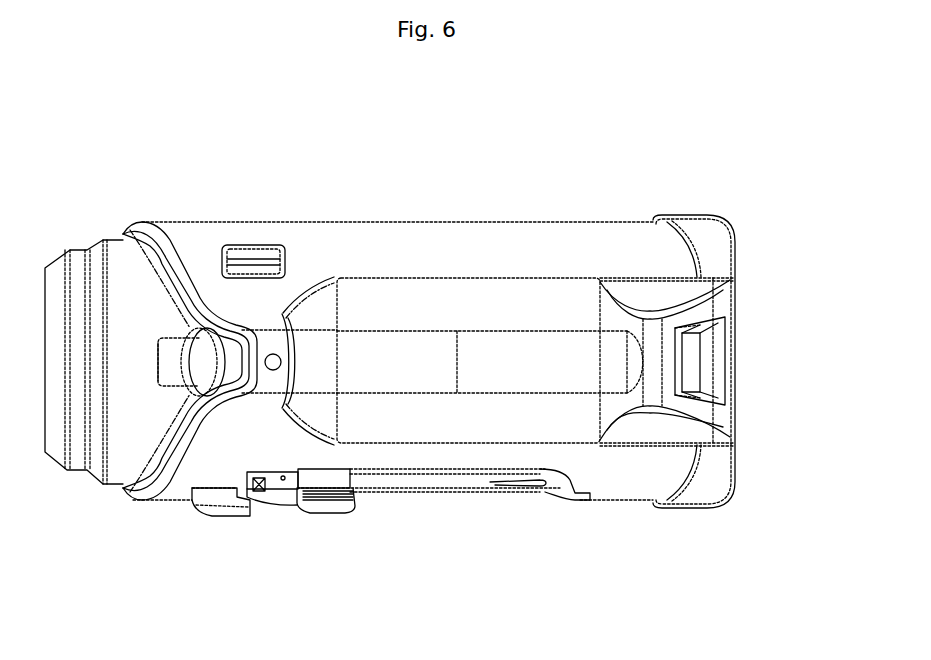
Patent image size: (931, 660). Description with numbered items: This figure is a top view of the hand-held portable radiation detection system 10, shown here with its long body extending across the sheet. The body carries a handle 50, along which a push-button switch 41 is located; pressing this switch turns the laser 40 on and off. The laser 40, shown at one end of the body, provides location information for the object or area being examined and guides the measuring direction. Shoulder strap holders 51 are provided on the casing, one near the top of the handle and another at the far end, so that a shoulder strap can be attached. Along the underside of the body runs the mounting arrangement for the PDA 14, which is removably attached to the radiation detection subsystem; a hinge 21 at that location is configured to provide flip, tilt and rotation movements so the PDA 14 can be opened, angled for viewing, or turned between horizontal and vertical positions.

The hand-held portable radiation detection system 10 is at (676, 173).
The PDA 14 is at (450, 481).
The hinge 21 is at (233, 515).
The laser 40 is at (163, 376).
The push-button switch 41 is at (280, 357).
The handle 50 is at (553, 367).
The shoulder strap holder 51 is at (250, 263).